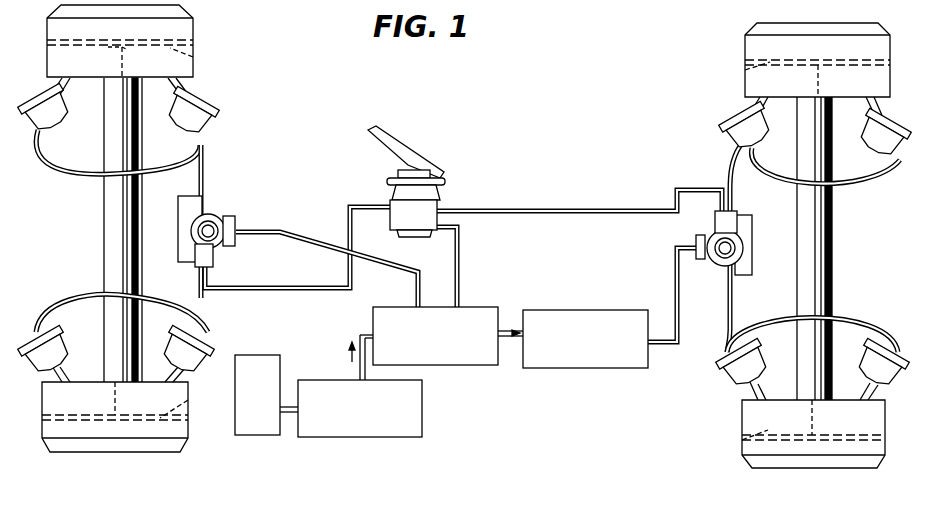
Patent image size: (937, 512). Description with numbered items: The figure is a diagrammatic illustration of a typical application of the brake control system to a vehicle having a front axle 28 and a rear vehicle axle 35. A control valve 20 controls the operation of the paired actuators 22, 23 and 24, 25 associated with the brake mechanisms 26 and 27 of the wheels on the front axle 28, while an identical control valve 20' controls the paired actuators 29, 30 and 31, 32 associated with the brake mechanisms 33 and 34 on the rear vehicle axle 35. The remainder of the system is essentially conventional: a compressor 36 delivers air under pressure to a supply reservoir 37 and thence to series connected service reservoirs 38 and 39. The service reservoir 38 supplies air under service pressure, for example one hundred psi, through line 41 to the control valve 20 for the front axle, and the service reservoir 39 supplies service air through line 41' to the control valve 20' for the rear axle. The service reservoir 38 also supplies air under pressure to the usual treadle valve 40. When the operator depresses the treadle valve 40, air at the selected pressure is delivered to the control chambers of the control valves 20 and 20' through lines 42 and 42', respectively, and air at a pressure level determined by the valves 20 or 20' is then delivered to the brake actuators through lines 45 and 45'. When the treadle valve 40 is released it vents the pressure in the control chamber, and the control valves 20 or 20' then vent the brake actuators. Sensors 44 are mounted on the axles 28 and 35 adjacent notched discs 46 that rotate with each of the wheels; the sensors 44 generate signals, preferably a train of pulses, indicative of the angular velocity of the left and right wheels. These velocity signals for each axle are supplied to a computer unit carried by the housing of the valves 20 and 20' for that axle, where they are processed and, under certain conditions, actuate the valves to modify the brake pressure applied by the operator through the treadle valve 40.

The control valve 20 is at (229, 212).
The control valve 20' is at (742, 238).
The actuator 22 is at (50, 93).
The actuator 23 is at (214, 120).
The actuator 24 is at (44, 363).
The actuator 25 is at (203, 342).
The brake mechanism 26 is at (193, 28).
The brake mechanism 27 is at (187, 438).
The front axle 28 is at (105, 222).
The actuator 29 is at (727, 127).
The actuator 30 is at (877, 152).
The actuator 31 is at (722, 360).
The actuator 32 is at (867, 347).
The brake mechanism 33 is at (745, 40).
The brake mechanism 34 is at (742, 421).
The rear vehicle axle 35 is at (834, 212).
The compressor 36 is at (283, 355).
The supply reservoir 37 is at (423, 398).
The service reservoir 38 is at (474, 307).
The service reservoir 39 is at (585, 310).
The treadle valve 40 is at (450, 172).
The line 41 is at (327, 254).
The line 41' is at (666, 295).
The line 42 is at (331, 257).
The line 42' is at (579, 192).
The sensor 44 is at (118, 48).
The line 45 is at (142, 231).
The line 45' is at (792, 249).
The notched disc 46 is at (193, 57).